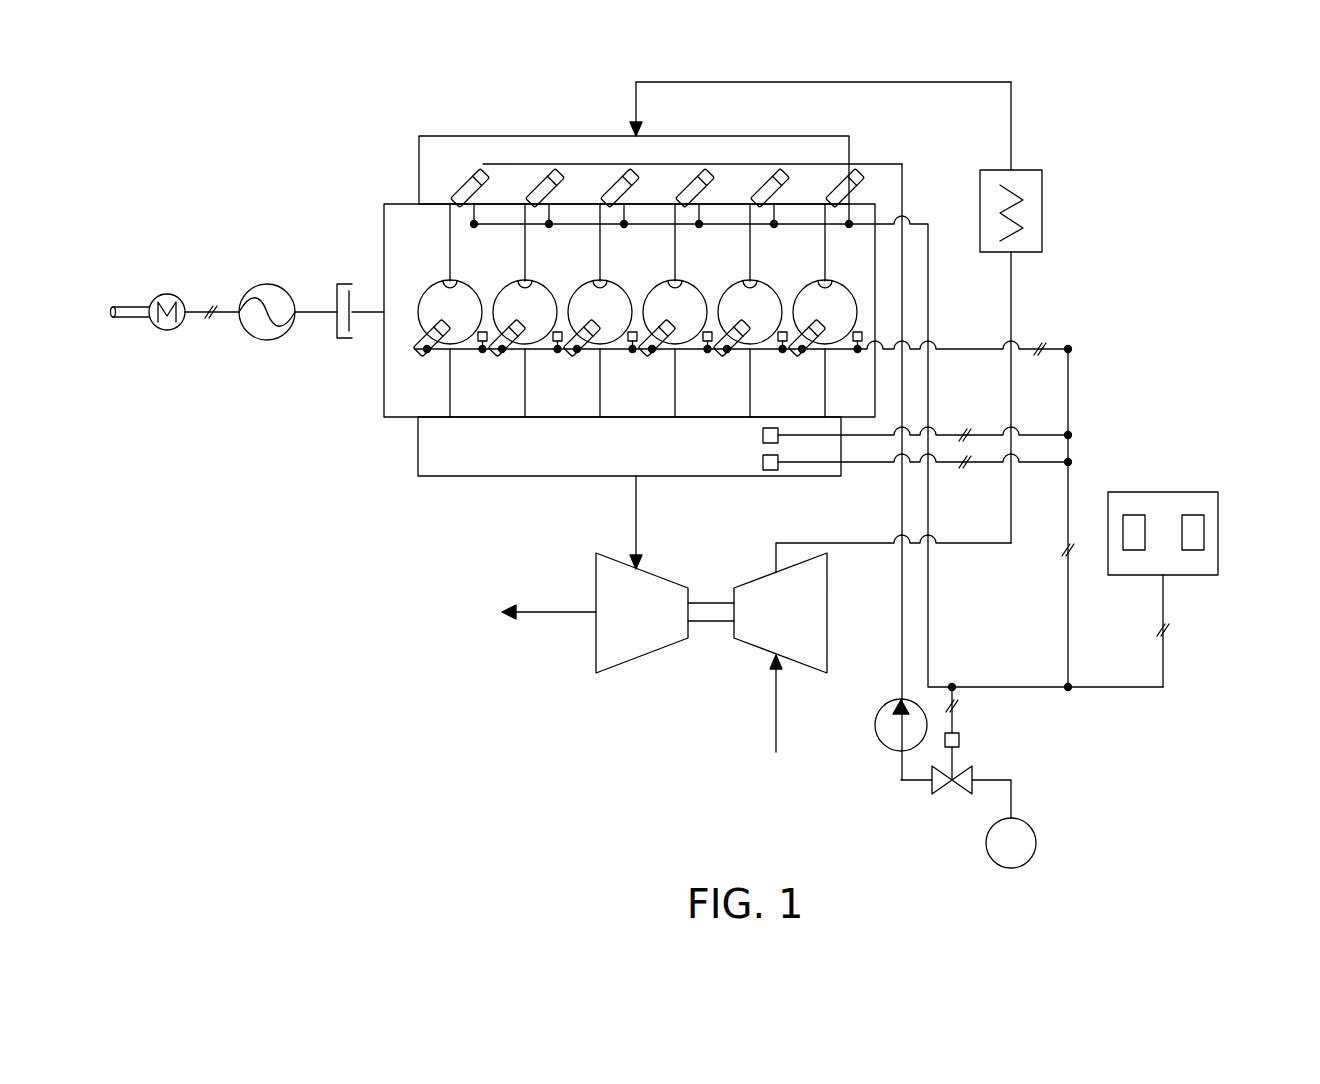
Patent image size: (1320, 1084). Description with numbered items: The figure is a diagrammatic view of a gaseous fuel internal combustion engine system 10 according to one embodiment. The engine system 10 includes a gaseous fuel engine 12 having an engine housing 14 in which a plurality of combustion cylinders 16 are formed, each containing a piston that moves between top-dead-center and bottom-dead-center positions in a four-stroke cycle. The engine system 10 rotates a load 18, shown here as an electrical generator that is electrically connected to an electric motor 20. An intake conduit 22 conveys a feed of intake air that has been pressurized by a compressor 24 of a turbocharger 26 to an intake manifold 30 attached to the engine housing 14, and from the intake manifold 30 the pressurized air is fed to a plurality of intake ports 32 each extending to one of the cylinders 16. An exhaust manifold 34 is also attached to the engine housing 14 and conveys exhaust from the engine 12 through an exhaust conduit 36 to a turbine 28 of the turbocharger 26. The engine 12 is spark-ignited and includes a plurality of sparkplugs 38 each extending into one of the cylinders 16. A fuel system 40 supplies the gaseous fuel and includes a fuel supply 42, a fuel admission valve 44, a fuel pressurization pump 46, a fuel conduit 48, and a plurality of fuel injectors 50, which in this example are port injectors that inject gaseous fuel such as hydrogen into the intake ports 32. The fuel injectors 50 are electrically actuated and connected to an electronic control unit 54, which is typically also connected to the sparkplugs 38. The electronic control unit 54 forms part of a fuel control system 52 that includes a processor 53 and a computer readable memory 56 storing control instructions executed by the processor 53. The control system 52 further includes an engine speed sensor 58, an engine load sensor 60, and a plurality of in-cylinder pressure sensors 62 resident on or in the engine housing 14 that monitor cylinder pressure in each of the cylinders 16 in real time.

The gaseous fuel internal combustion engine system 10 is at (1166, 165).
The gaseous fuel engine 12 is at (380, 426).
The engine housing 14 is at (384, 218).
The combustion cylinders 16 is at (463, 283).
The load 18 is at (248, 338).
The electric motor 20 is at (167, 332).
The intake conduit 22 is at (968, 545).
The compressor 24 is at (748, 643).
The turbocharger 26 is at (801, 683).
The turbine 28 is at (672, 643).
The intake manifold 30 is at (441, 147).
The intake ports 32 is at (455, 203).
The exhaust manifold 34 is at (458, 478).
The exhaust conduit 36 is at (637, 515).
The sparkplugs 38 is at (420, 357).
The fuel system 40 is at (903, 800).
The fuel supply 42 is at (1037, 838).
The fuel admission valve 44 is at (968, 766).
The fuel pressurization pump 46 is at (885, 745).
The fuel conduit 48 is at (900, 583).
The fuel injectors 50 is at (485, 175).
The fuel control system 52 is at (1224, 484).
The processor 53 is at (1135, 515).
The electronic control unit 54 is at (1202, 578).
The computer readable memory 56 is at (1190, 515).
The engine speed sensor 58 is at (763, 435).
The engine load sensor 60 is at (763, 462).
The in-cylinder pressure sensors 62 is at (480, 343).